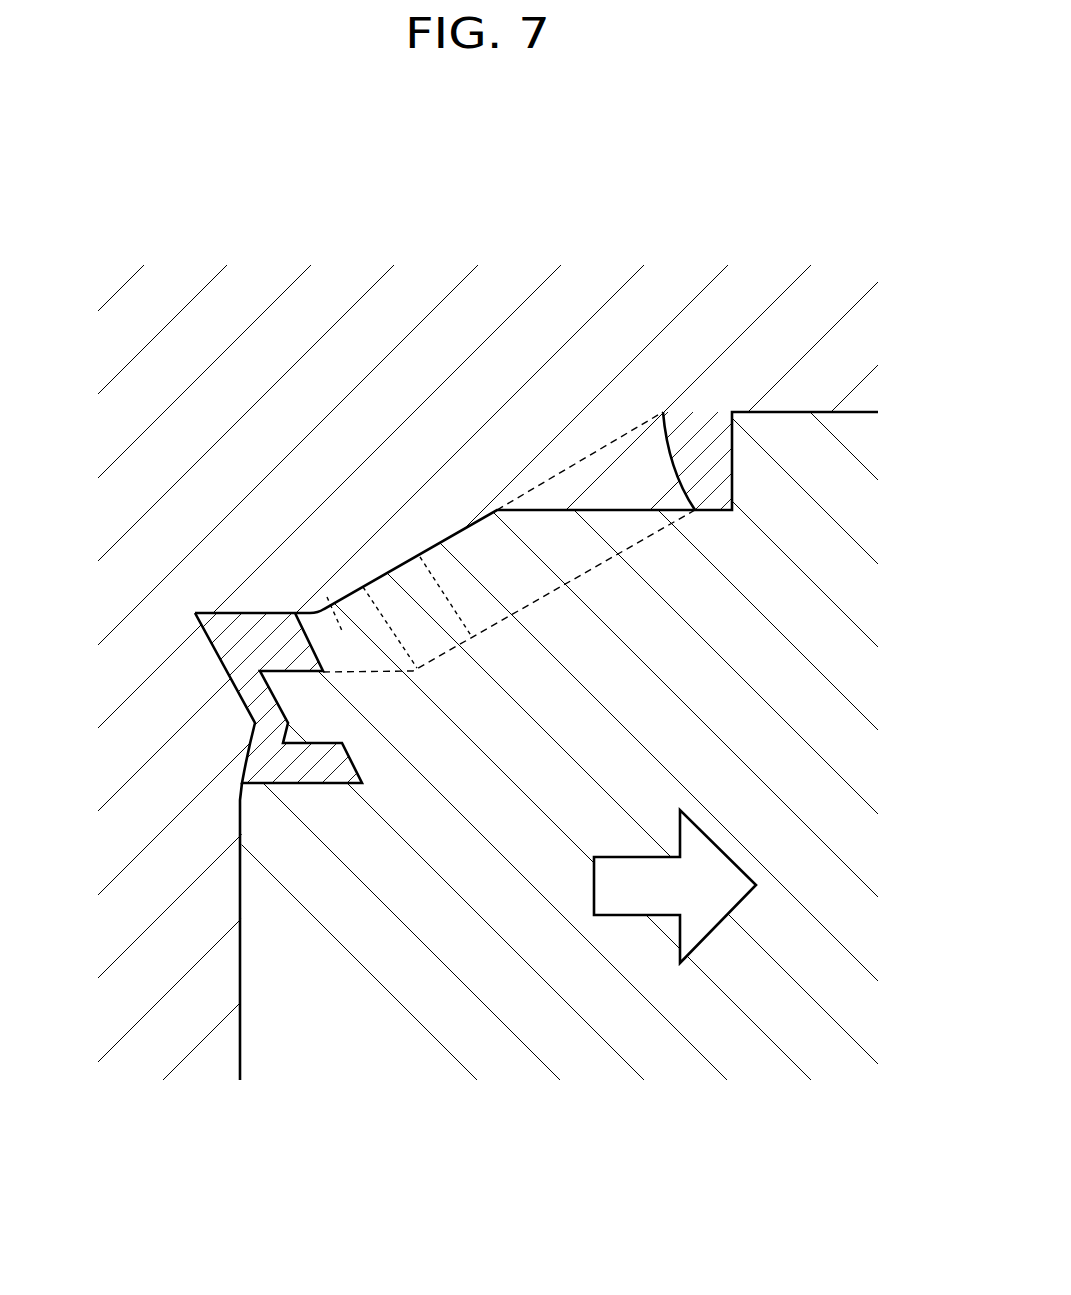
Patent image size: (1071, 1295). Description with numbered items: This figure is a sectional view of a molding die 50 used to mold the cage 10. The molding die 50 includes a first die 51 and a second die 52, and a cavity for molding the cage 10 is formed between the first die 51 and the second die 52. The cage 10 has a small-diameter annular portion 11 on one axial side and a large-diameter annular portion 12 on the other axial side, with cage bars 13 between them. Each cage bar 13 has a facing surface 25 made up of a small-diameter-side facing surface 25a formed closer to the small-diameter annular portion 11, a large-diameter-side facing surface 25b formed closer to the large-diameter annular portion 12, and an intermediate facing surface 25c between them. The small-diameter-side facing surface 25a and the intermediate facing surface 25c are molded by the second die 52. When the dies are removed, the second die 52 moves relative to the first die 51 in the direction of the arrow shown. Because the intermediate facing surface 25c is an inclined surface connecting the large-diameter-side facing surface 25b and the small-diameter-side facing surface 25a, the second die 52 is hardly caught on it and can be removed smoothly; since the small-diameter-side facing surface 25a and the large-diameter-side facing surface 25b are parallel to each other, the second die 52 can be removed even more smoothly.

The cage 10 is at (467, 464).
The small-diameter annular portion 11 is at (237, 648).
The large-diameter annular portion 12 is at (708, 458).
The cage bar 13 is at (552, 468).
The facing surface 25 is at (355, 198).
The small-diameter-side facing surface 25a is at (330, 603).
The large-diameter-side facing surface 25b is at (475, 565).
The intermediate facing surface 25c is at (403, 610).
The molding die 50 is at (535, 664).
The first die 51 is at (618, 313).
The second die 52 is at (468, 1025).